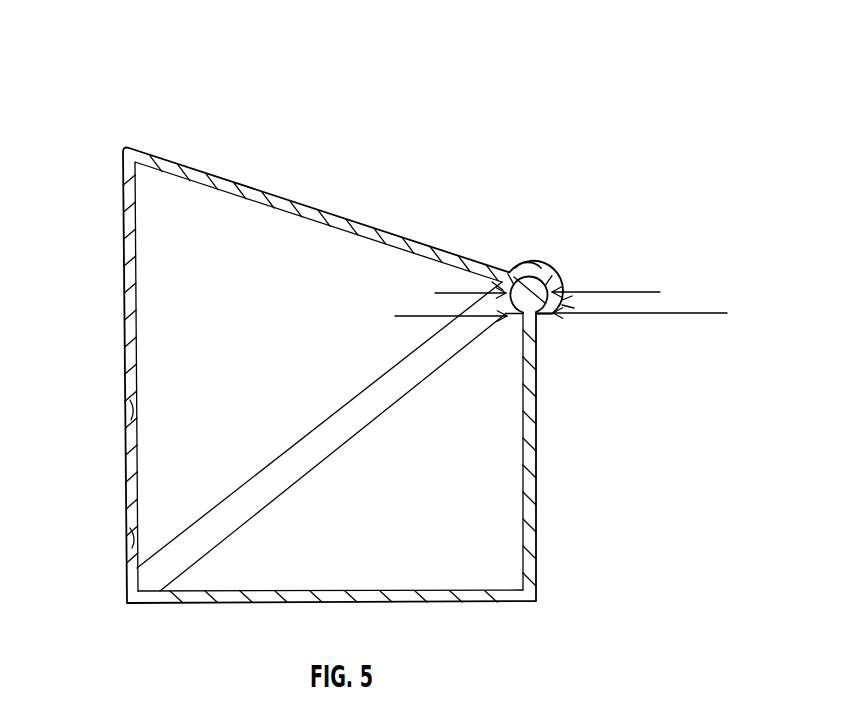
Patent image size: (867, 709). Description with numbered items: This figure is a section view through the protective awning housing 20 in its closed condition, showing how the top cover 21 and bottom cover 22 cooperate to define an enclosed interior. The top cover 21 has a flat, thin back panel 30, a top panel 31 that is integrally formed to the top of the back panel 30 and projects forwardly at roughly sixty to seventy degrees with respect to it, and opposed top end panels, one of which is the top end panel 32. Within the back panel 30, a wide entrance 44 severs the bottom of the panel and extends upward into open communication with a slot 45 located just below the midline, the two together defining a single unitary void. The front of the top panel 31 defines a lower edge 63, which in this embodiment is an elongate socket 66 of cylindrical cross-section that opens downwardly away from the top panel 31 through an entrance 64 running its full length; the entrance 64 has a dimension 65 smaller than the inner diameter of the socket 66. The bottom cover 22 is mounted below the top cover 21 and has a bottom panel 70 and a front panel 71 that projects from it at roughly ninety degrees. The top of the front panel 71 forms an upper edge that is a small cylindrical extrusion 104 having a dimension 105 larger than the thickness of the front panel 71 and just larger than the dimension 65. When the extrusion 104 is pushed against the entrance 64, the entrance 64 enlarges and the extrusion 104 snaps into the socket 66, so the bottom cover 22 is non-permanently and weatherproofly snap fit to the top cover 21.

The protective awning housing 20 is at (606, 131).
The top cover 21 is at (163, 128).
The bottom cover 22 is at (500, 632).
The back panel 30 is at (124, 234).
The top panel 31 is at (309, 205).
The top end panel 32 is at (325, 236).
The entrance 44 is at (133, 535).
The slot 45 is at (131, 412).
The lower edge 63 is at (553, 277).
The entrance 64 is at (514, 326).
The dimension 65 is at (695, 313).
The socket 66 is at (516, 284).
The bottom panel 70 is at (217, 603).
The front panel 71 is at (537, 450).
The cylindrical extrusion 104 is at (526, 268).
The dimension 105 is at (660, 292).